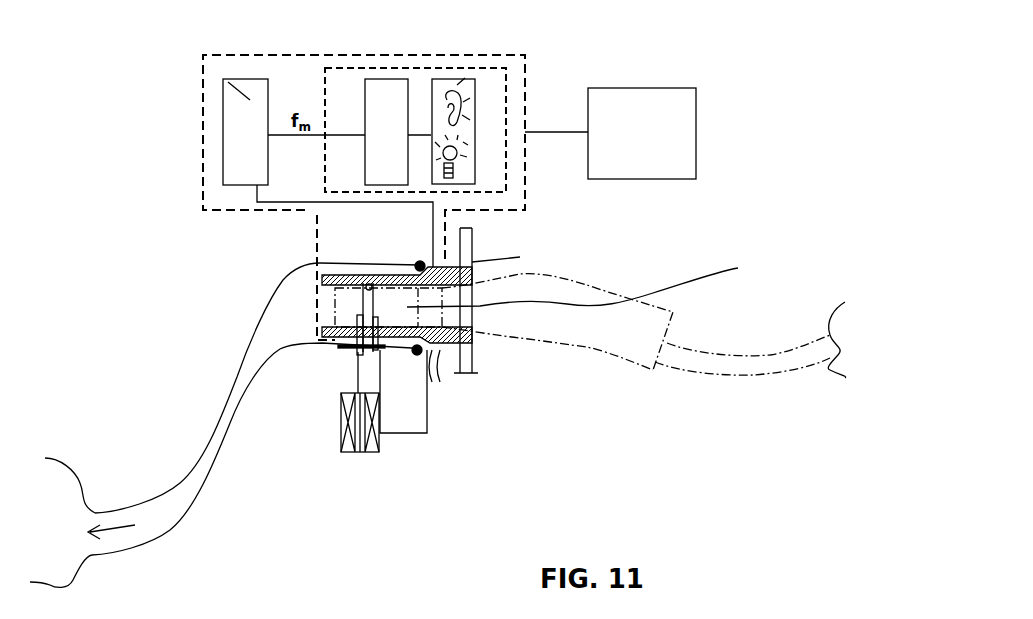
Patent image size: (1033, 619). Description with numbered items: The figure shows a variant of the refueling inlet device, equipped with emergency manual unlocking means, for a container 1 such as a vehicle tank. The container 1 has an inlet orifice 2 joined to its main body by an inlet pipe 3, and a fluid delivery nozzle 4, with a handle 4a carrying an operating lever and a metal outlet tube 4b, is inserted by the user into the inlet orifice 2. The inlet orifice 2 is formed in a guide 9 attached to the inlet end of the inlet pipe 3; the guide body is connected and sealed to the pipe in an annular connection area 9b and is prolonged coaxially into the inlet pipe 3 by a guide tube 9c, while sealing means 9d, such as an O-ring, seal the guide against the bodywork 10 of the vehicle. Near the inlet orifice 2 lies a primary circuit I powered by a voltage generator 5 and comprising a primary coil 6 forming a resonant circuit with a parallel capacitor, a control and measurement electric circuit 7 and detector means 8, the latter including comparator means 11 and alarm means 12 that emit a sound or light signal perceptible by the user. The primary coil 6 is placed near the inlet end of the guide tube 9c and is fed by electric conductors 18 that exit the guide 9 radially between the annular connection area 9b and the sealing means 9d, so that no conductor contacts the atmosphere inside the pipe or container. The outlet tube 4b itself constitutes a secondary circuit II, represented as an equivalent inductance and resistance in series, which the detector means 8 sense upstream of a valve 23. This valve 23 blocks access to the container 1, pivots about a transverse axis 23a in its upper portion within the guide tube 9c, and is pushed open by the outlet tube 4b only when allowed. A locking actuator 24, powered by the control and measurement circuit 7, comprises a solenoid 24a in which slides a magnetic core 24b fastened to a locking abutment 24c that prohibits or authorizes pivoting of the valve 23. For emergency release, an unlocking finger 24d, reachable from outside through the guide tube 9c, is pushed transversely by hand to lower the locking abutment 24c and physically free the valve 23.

The container 1 is at (86, 568).
The inlet orifice 2 is at (490, 343).
The inlet pipe 3 is at (226, 432).
The fluid delivery nozzle 4 is at (637, 370).
The handle 4a is at (585, 333).
The outlet tube 4b is at (343, 305).
The voltage generator 5 is at (683, 132).
The primary coil 6 is at (437, 352).
The control and measurement electric circuit 7 is at (223, 79).
The detector means 8 is at (345, 95).
The guide 9 is at (458, 277).
The annular connection area 9b is at (416, 355).
The guide tube 9c is at (357, 353).
The sealing means 9d is at (472, 266).
The bodywork 10 is at (464, 232).
The comparator means 11 is at (388, 93).
The alarm means 12 is at (465, 163).
The electric conductors 18 is at (335, 202).
The valve 23 is at (362, 284).
The transverse axis 23a is at (372, 284).
The locking actuator 24 is at (337, 471).
The solenoid 24a is at (373, 452).
The magnetic core 24b is at (358, 453).
The locking abutment 24c is at (340, 348).
The unlocking finger 24d is at (372, 350).
The primary circuit I is at (203, 213).
The secondary circuit II is at (575, 286).